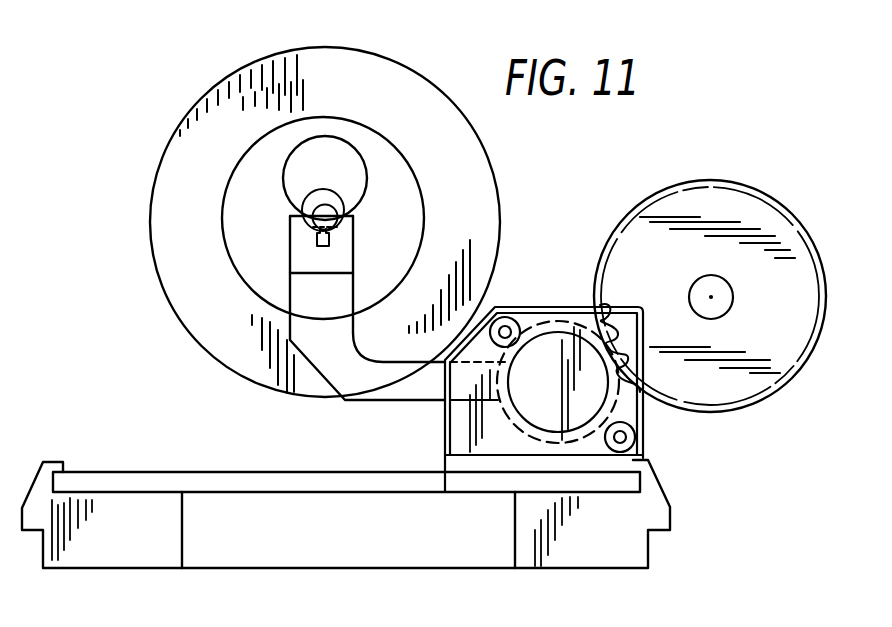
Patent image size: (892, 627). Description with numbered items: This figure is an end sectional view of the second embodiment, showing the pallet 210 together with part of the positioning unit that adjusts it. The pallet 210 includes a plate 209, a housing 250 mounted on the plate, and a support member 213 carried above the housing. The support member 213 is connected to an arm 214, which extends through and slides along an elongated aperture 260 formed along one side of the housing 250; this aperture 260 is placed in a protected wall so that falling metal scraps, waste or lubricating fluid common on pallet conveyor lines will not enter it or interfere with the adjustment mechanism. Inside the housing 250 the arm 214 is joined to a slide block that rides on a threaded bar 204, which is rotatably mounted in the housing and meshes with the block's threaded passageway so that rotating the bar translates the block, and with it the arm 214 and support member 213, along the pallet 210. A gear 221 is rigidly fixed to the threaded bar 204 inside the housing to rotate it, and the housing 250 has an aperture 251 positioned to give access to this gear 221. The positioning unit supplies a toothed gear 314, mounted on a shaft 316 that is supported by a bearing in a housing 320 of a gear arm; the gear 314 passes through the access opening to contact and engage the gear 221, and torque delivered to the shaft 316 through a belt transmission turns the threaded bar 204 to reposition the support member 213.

The support member 213 is at (307, 242).
The arm 214 is at (372, 394).
The elongated aperture 260 is at (436, 388).
The threaded bar 204 is at (635, 383).
The gear 221 is at (556, 335).
The aperture 251 is at (593, 402).
The toothed gear 314 is at (590, 312).
The housing 250 is at (652, 455).
The housing 320 is at (718, 181).
The shaft 316 is at (733, 298).
The plate 209 is at (130, 457).
The pallet 210 is at (123, 560).